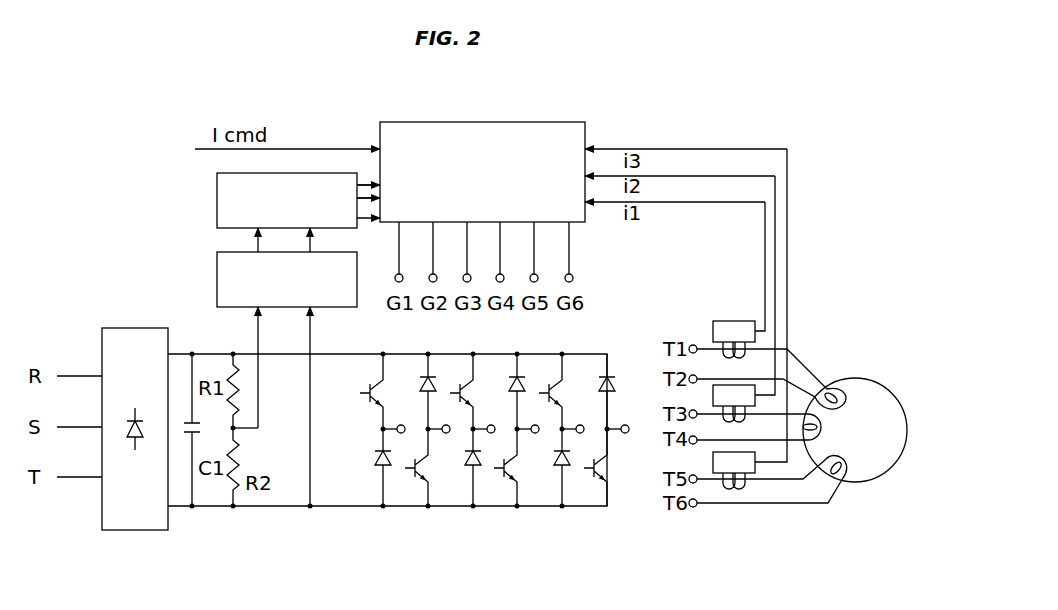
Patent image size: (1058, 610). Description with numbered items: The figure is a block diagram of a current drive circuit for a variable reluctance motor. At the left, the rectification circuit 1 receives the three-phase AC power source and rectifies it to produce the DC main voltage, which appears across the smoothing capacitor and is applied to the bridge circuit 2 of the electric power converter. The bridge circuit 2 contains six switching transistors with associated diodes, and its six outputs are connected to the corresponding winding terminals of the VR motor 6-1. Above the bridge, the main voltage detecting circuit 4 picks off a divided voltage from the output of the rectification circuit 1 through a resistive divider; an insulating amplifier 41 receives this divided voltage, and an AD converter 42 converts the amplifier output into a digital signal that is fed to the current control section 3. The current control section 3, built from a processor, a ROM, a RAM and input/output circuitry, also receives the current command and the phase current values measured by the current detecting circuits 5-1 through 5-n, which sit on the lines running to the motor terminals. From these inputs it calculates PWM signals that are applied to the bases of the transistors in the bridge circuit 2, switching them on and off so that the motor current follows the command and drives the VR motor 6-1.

The rectification circuit 1 is at (124, 328).
The bridge circuit 2 is at (464, 528).
The current control section 3 is at (474, 122).
The main voltage detecting circuit 4 is at (253, 339).
The insulating amplifier 41 is at (217, 277).
The AD converter 42 is at (217, 202).
The current detecting circuit 5-1 is at (727, 321).
The current detecting circuit 5-n is at (713, 456).
The VR motor 6-1 is at (851, 377).